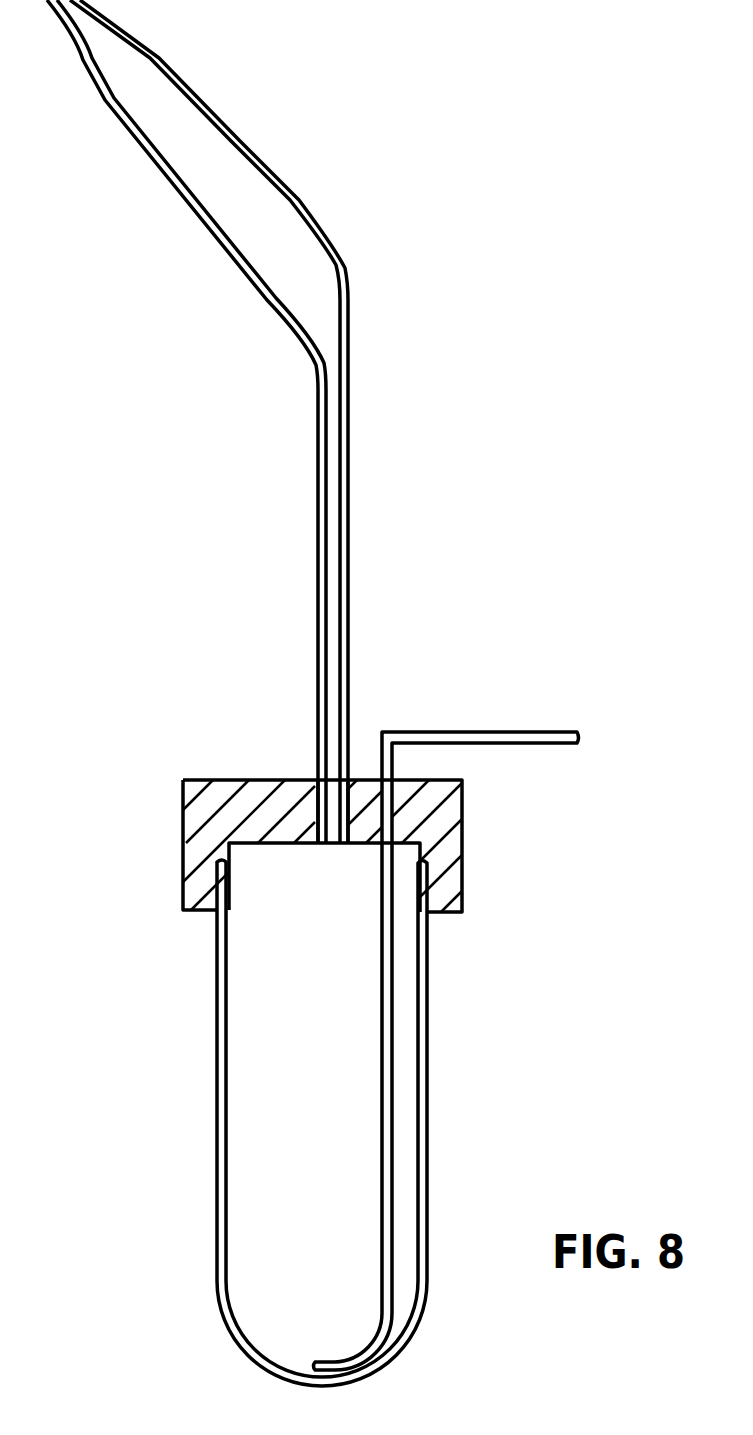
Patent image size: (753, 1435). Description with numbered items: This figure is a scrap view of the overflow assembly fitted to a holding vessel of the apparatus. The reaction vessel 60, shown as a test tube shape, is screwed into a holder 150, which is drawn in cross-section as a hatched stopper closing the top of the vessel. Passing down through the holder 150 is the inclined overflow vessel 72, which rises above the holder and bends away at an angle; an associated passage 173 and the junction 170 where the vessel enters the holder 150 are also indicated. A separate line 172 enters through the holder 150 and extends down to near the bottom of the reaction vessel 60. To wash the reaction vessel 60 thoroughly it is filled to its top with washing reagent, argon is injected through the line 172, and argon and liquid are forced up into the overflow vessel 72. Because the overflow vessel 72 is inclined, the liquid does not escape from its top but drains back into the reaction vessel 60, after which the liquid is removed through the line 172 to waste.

The overflow vessel 72 is at (291, 200).
The inner lumen of tube 173 is at (331, 610).
The tube passage through stopper 170 is at (333, 778).
The holder 150 is at (438, 857).
The line 172 is at (502, 735).
The reaction vessel 60 is at (426, 1055).